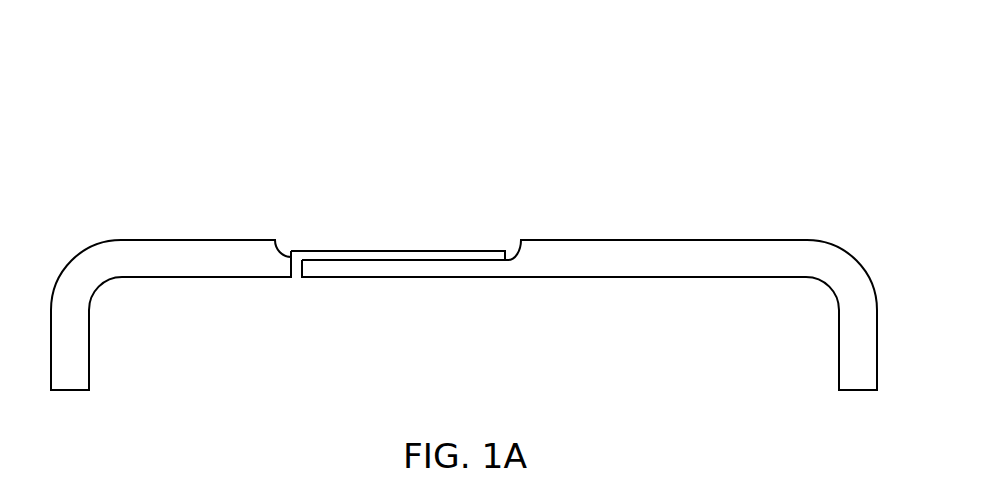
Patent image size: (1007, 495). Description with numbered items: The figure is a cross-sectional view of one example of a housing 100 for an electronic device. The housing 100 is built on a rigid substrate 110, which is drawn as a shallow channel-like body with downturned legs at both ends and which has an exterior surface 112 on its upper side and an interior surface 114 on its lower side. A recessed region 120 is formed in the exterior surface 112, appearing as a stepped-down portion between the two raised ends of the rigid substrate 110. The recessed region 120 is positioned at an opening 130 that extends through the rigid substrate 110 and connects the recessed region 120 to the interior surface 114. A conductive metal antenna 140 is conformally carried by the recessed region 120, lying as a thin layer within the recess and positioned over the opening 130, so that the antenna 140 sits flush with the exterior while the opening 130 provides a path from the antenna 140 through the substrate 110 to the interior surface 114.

The housing 100 is at (150, 97).
The rigid substrate 110 is at (193, 257).
The exterior surface 112 is at (666, 240).
The interior surface 114 is at (666, 277).
The recessed region 120 is at (416, 205).
The opening 130 is at (296, 303).
The conductive metal antenna 140 is at (388, 257).